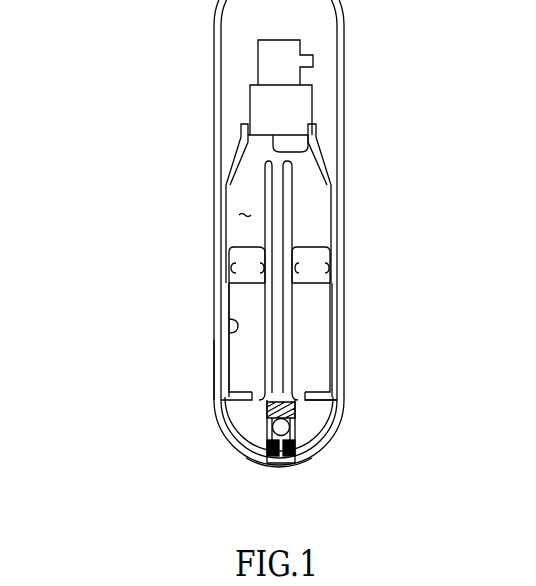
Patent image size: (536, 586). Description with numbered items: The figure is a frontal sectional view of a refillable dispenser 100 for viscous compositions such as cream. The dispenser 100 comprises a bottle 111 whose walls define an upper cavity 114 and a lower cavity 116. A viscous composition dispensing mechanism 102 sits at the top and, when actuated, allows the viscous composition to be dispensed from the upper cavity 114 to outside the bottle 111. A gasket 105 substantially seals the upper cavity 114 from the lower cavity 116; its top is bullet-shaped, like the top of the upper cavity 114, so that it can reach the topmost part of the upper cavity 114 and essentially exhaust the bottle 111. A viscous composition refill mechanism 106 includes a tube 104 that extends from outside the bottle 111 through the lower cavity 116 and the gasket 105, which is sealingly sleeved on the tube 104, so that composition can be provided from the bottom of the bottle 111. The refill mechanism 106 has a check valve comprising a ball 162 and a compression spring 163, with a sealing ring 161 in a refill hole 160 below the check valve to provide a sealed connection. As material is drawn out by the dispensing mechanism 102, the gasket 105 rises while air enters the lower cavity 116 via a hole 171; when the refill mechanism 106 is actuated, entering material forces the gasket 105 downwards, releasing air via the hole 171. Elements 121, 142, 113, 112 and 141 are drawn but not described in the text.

The dispenser 100 is at (160, 118).
The viscous composition dispensing mechanism 102 is at (293, 103).
The connector 121 is at (282, 149).
The air outlet 142 is at (282, 163).
The upper cavity 114 is at (326, 233).
The lower cavity 116 is at (243, 300).
The gasket 105 is at (331, 283).
The tube 104 is at (288, 375).
The bottle 111 is at (342, 329).
The air inlet 113 is at (228, 341).
The housing sidewall 112 is at (215, 367).
The hole 171 is at (318, 396).
The viscous composition refill mechanism 106 is at (303, 414).
The ball 162 is at (288, 432).
The refill hole 160 is at (284, 457).
The sealing ring 161 is at (266, 449).
The compression spring 163 is at (268, 411).
The air intake hole 141 is at (265, 463).